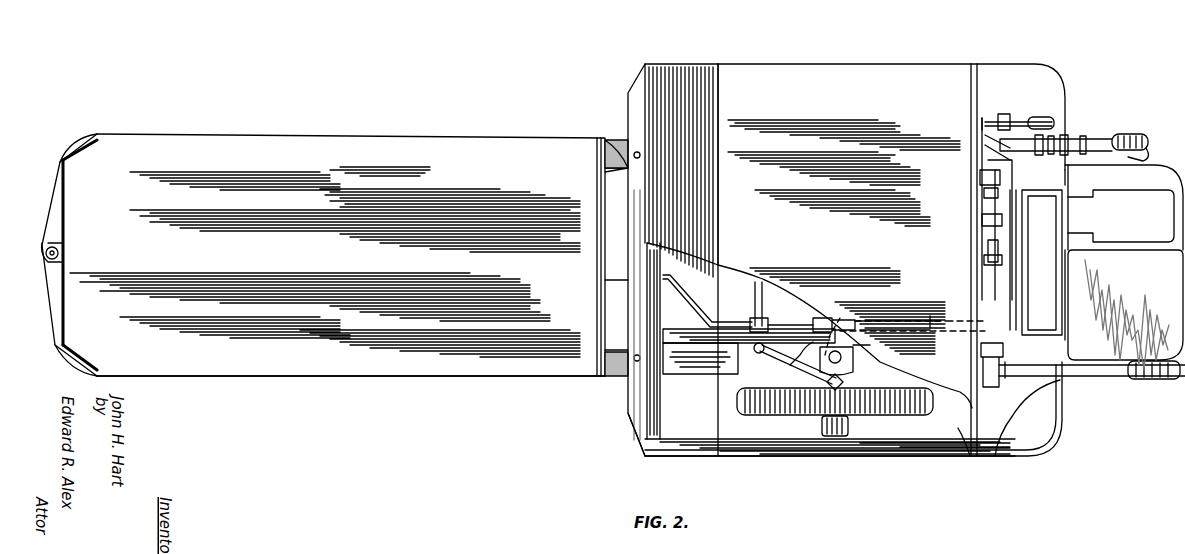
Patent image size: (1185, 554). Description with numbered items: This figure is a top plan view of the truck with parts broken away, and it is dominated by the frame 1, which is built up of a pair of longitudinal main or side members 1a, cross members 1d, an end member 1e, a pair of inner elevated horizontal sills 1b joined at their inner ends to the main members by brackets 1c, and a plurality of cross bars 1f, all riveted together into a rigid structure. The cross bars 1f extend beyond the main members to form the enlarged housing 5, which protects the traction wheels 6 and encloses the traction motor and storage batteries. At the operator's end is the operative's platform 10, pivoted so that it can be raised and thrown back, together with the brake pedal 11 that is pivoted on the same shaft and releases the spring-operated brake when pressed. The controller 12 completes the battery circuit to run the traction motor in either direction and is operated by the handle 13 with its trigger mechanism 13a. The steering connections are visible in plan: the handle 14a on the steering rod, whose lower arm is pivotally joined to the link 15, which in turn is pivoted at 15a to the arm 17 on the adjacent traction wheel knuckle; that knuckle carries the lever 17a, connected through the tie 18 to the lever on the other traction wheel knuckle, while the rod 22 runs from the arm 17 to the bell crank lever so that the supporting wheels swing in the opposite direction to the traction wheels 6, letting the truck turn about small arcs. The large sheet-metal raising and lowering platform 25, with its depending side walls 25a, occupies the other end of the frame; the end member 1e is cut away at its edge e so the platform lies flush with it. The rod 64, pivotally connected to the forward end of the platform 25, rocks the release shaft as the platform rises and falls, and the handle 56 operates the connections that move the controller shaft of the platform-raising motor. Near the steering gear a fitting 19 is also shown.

The frame 1 is at (645, 66).
The main or side members 1a is at (620, 140).
The inner elevated horizontal sills 1b is at (690, 335).
The brackets 1c is at (700, 364).
The cross members 1d is at (895, 453).
The end member 1e is at (66, 202).
The cross bars 1f is at (632, 416).
The housing 5 is at (852, 72).
The traction wheels 6 is at (780, 387).
The platform 10 is at (1108, 345).
The brake pedal 11 is at (1150, 195).
The controller 12 is at (1037, 255).
The handle 13 is at (1120, 132).
The trigger mechanism 13a is at (1150, 150).
The handle 14a is at (1118, 378).
The link 15 is at (950, 315).
The pivotal connection 15a is at (855, 312).
The arm 17 is at (872, 340).
The lever 17a is at (790, 372).
The tie 18 is at (757, 298).
The valve bracket 19 is at (980, 178).
The rod 22 is at (620, 282).
The raising and lowering platform 25 is at (323, 255).
The depending side walls 25a is at (350, 378).
The handle 56 is at (1045, 118).
The rod 64 is at (612, 172).
The tank bevel e is at (63, 350).